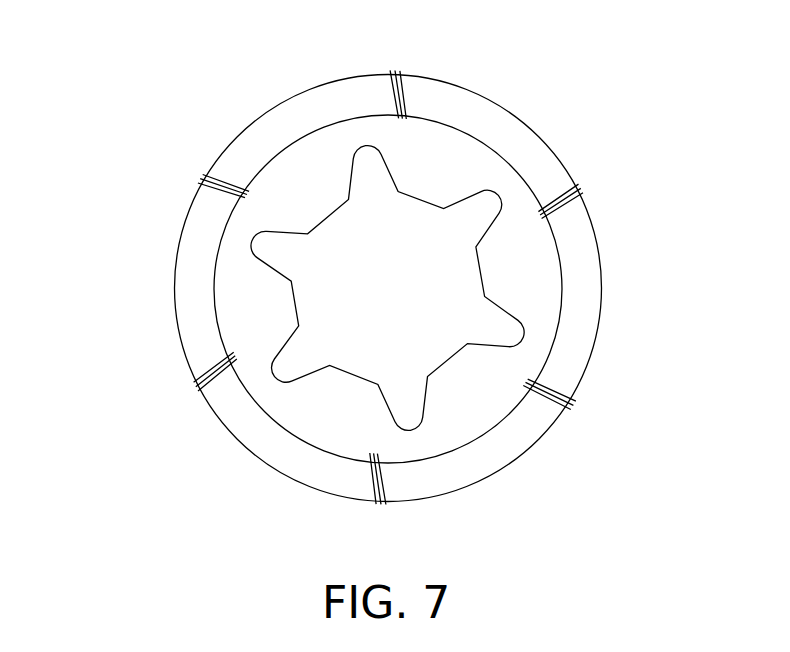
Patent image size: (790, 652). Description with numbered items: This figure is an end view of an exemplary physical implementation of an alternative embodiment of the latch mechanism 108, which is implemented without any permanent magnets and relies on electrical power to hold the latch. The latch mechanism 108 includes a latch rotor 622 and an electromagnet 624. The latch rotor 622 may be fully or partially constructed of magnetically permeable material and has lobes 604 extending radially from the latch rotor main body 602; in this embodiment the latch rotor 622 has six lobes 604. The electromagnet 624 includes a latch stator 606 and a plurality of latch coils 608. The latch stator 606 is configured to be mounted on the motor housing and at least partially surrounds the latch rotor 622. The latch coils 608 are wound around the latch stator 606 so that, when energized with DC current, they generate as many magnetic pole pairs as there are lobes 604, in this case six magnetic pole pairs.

The latch mechanism 108 is at (175, 113).
The latch rotor main body 602 is at (420, 304).
The lobes 604 is at (313, 288).
The latch stator 606 is at (603, 271).
The latch coils 608 is at (397, 76).
The latch rotor 622 is at (288, 307).
The electromagnet 624 is at (505, 110).